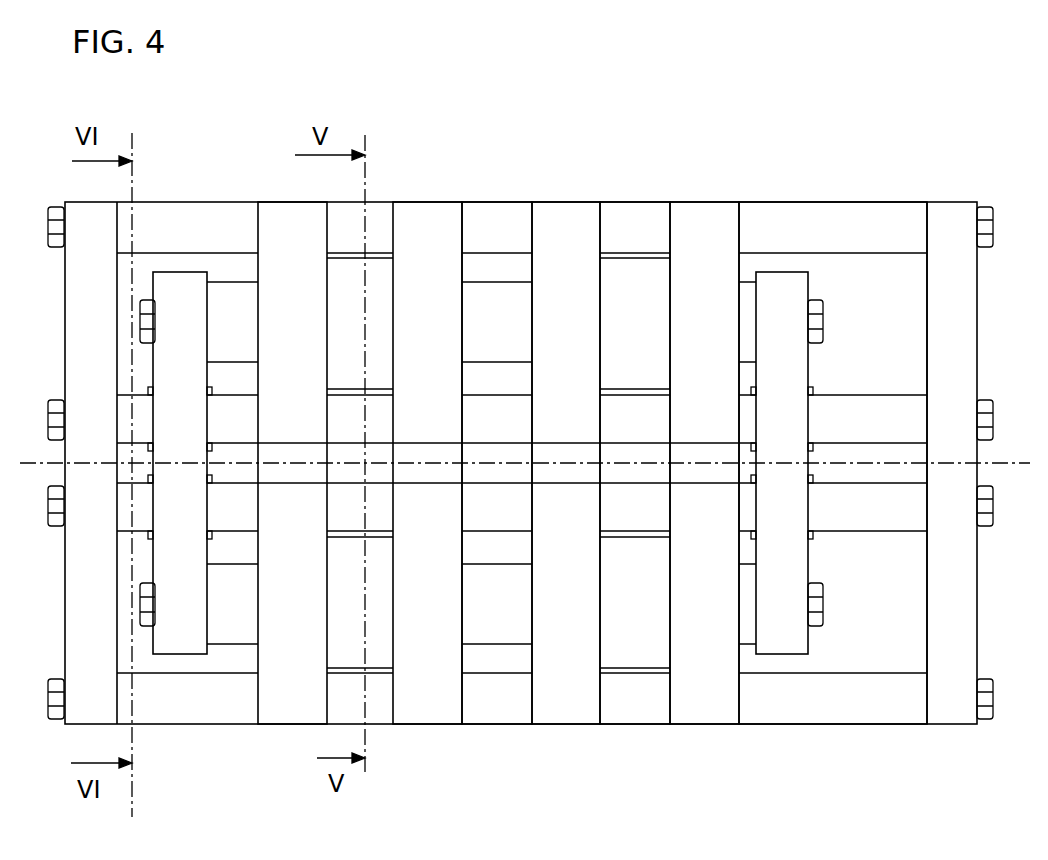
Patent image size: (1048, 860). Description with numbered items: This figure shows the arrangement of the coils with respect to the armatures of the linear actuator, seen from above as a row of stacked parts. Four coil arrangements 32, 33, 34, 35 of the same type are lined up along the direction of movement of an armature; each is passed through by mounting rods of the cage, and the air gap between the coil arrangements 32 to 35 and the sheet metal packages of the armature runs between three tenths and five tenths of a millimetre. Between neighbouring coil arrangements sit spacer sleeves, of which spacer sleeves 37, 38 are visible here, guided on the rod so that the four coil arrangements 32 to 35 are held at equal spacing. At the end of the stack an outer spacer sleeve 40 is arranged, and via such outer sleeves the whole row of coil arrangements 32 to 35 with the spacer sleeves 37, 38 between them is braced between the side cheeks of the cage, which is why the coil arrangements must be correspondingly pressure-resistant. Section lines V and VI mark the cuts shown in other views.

The coil arrangement 32 is at (272, 225).
The coil arrangement 33 is at (422, 217).
The coil arrangement 34 is at (565, 218).
The coil arrangement 35 is at (697, 225).
The spacer sleeve 37 is at (490, 210).
The spacer sleeve 38 is at (622, 213).
The outer spacer sleeve 40 is at (802, 218).